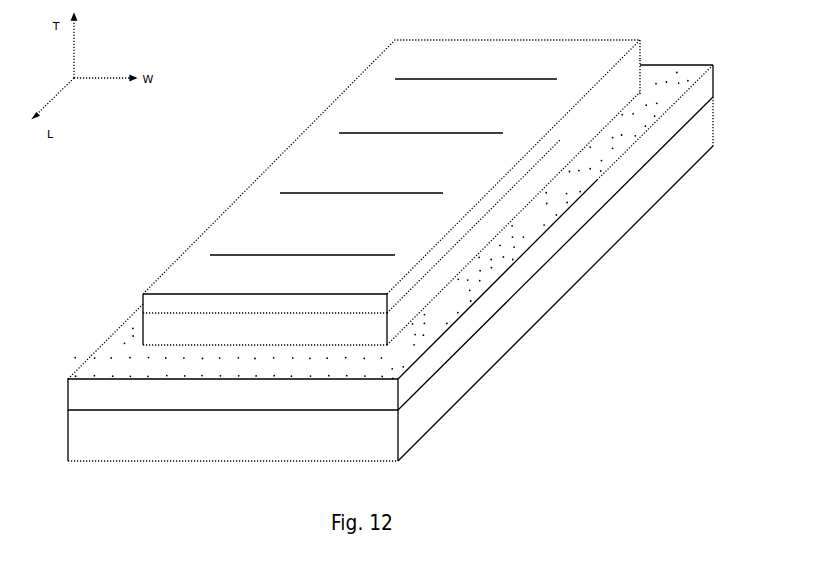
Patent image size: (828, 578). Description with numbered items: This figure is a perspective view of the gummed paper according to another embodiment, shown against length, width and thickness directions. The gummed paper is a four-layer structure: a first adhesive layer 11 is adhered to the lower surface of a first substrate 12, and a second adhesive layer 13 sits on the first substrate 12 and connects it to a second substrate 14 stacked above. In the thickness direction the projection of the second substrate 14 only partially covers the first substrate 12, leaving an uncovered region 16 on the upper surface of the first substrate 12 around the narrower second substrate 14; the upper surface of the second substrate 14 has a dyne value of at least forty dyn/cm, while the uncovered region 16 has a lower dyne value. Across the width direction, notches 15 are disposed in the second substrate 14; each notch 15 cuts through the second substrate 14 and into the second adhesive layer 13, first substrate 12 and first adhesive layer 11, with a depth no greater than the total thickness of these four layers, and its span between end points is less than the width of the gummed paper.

The first adhesive layer 11 is at (493, 340).
The first substrate 12 is at (527, 265).
The second adhesive layer 13 is at (563, 152).
The second substrate 14 is at (560, 140).
The notch 15 is at (302, 192).
The uncovered region 16 is at (115, 358).